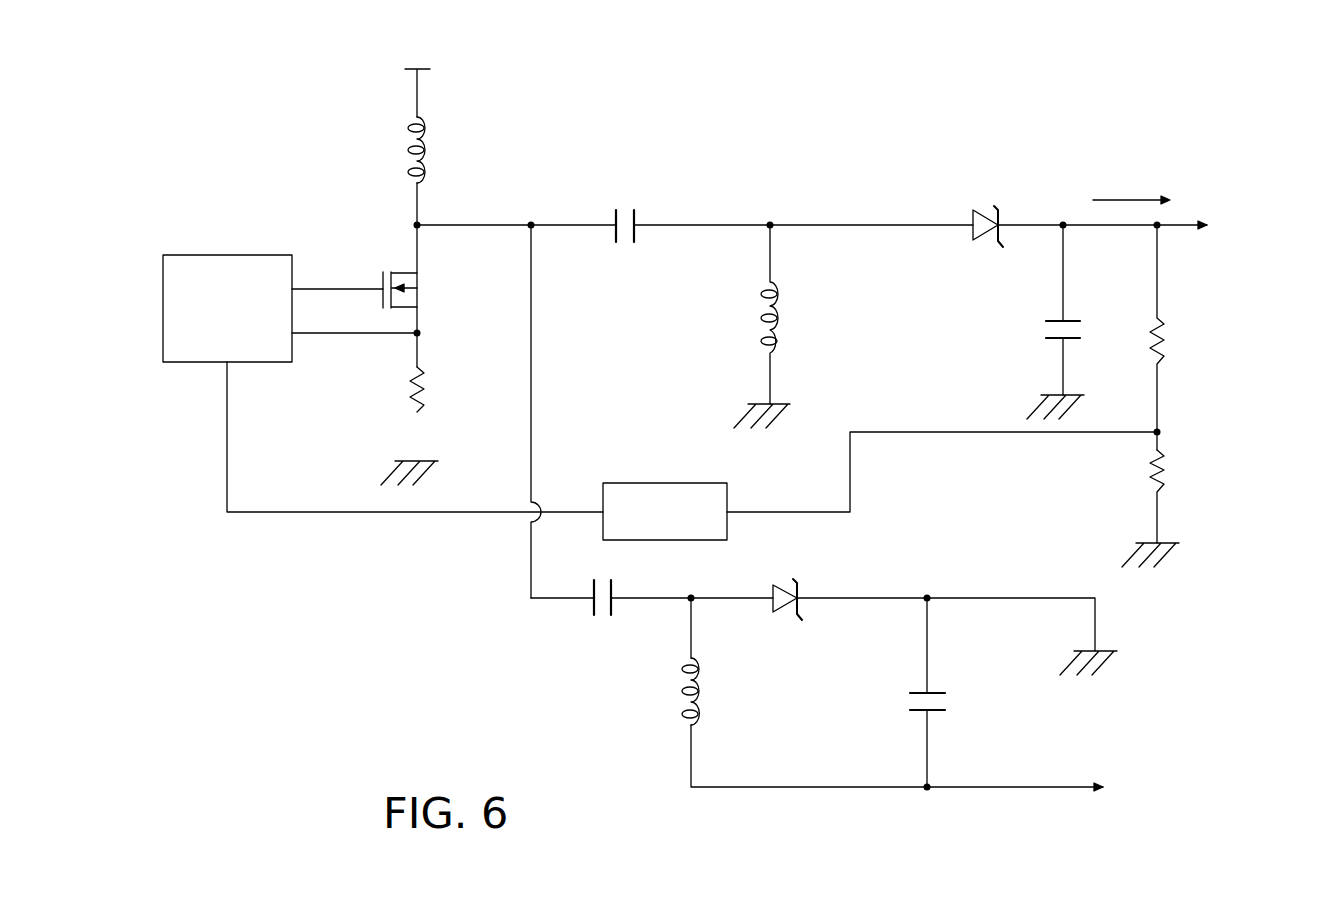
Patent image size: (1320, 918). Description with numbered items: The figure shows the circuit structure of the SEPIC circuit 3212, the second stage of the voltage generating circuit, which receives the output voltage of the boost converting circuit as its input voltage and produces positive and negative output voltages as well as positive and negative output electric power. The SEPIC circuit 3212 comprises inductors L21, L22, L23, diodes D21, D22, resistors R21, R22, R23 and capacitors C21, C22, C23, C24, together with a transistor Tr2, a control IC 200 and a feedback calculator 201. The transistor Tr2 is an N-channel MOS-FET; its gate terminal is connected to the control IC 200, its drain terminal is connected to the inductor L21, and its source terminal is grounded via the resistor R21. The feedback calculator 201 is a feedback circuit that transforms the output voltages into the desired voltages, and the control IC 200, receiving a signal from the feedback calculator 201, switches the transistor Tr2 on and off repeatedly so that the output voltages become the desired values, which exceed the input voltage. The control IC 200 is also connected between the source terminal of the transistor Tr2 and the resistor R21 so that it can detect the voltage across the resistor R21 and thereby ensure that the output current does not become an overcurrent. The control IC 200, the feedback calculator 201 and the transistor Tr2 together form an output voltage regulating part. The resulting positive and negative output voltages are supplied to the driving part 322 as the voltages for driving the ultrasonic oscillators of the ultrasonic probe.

The SEPIC circuit 3212 is at (340, 603).
The control IC 200 is at (212, 255).
The feedback calculator 201 is at (652, 483).
The driving part 322 is at (1219, 510).
The transistor Tr2 is at (381, 282).
The inductor L21 is at (427, 120).
The inductor L22 is at (779, 305).
The inductor L23 is at (700, 724).
The resistor R21 is at (410, 392).
The resistor R22 is at (1166, 340).
The resistor R23 is at (1170, 470).
The capacitor C21 is at (640, 210).
The capacitor C22 is at (598, 617).
The capacitor C23 is at (1070, 318).
The capacitor C24 is at (935, 690).
The diode D21 is at (975, 212).
The diode D22 is at (785, 612).